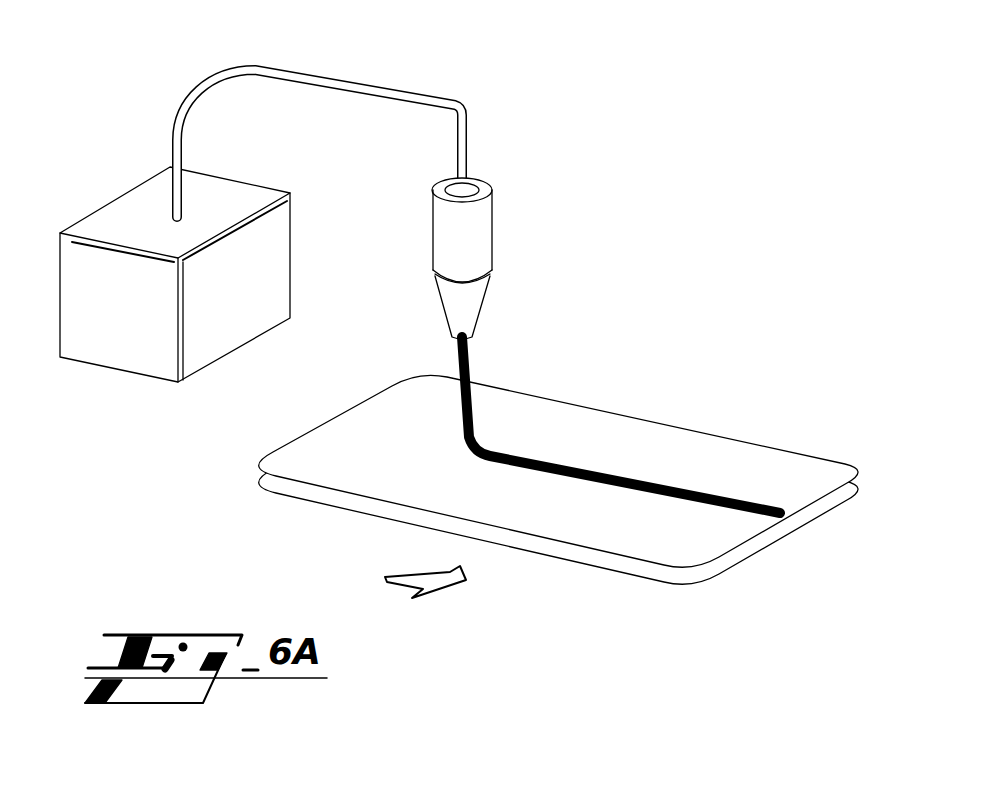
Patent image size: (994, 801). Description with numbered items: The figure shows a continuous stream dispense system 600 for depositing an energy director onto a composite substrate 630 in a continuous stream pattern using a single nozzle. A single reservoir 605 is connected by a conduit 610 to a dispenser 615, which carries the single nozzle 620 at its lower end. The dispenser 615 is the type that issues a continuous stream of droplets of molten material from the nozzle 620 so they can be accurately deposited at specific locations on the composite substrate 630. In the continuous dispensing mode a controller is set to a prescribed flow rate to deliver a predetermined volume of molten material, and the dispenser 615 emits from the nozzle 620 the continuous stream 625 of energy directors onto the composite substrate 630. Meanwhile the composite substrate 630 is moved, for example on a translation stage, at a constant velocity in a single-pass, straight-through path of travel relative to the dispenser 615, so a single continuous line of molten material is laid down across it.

The continuous stream dispense system 600 is at (745, 213).
The reservoir 605 is at (222, 347).
The conduit 610 is at (362, 85).
The dispenser 615 is at (495, 235).
The nozzle 620 is at (488, 295).
The continuous stream 625 is at (610, 472).
The composite substrate 630 is at (718, 450).